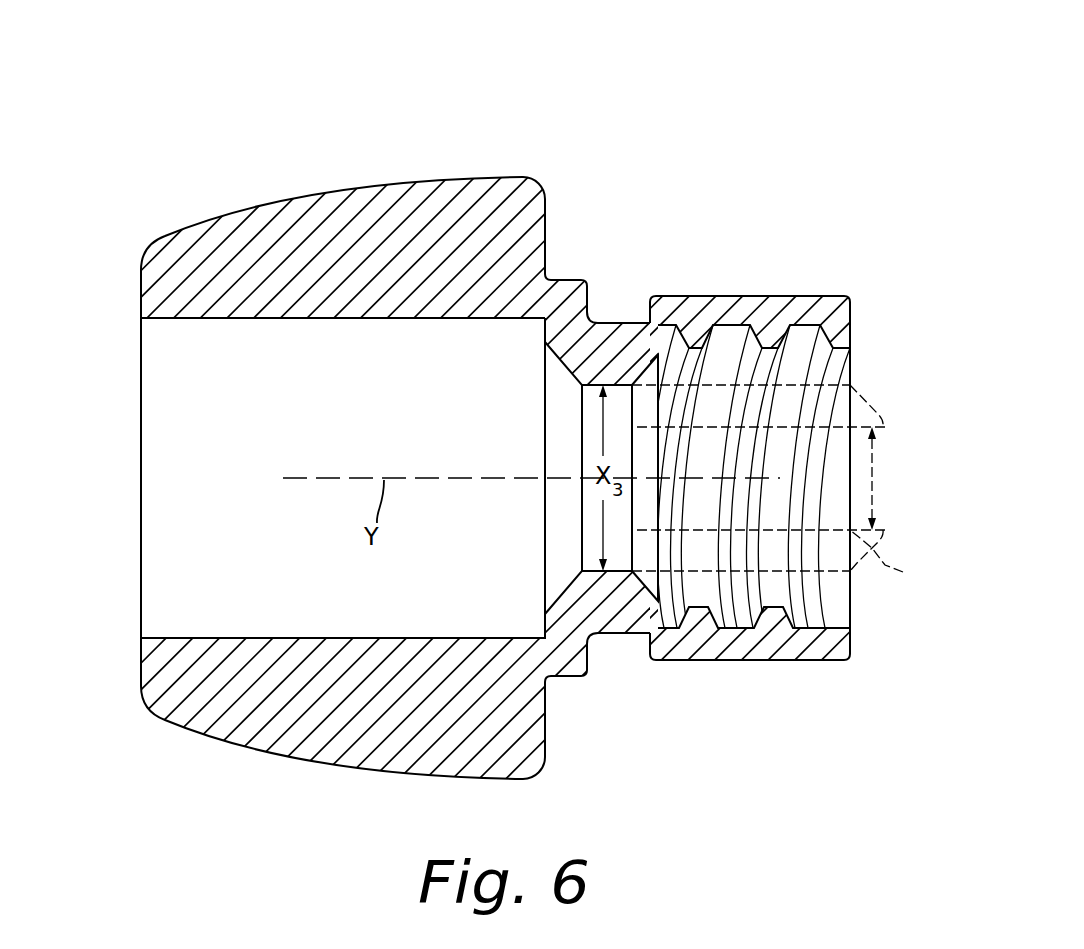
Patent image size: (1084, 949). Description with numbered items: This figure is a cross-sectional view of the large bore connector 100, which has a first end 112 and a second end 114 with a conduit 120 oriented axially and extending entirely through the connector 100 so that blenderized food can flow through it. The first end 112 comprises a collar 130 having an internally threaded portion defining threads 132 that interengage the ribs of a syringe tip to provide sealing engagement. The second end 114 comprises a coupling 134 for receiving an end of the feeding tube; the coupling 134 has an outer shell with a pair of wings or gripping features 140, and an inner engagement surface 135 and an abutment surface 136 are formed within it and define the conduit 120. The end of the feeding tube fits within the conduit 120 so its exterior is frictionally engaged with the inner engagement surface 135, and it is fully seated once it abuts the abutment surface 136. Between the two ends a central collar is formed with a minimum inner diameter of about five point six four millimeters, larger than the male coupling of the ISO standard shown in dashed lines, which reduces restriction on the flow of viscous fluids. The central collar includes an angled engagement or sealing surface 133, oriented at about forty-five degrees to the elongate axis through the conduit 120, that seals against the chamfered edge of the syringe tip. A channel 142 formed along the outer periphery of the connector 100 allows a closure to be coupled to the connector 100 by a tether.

The connector 100 is at (690, 100).
The first end 112 is at (908, 315).
The second end 114 is at (79, 663).
The conduit 120 is at (184, 512).
The collar 130 is at (803, 296).
The threads 132 is at (838, 366).
The angled engagement or sealing surface 133 is at (656, 384).
The coupling 134 is at (183, 757).
The inner engagement surface 135 is at (292, 330).
The abutment surface 136 is at (531, 334).
The wings or gripping features 140 is at (398, 184).
The channel 142 is at (620, 680).